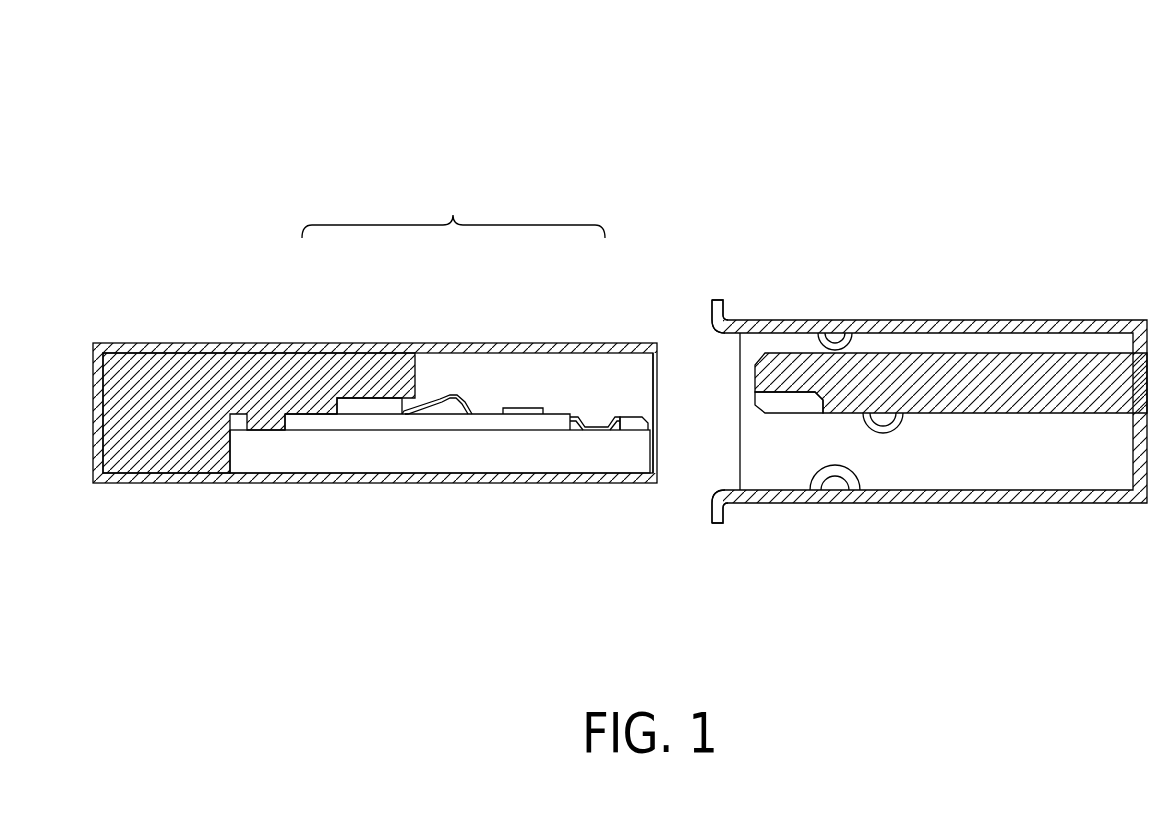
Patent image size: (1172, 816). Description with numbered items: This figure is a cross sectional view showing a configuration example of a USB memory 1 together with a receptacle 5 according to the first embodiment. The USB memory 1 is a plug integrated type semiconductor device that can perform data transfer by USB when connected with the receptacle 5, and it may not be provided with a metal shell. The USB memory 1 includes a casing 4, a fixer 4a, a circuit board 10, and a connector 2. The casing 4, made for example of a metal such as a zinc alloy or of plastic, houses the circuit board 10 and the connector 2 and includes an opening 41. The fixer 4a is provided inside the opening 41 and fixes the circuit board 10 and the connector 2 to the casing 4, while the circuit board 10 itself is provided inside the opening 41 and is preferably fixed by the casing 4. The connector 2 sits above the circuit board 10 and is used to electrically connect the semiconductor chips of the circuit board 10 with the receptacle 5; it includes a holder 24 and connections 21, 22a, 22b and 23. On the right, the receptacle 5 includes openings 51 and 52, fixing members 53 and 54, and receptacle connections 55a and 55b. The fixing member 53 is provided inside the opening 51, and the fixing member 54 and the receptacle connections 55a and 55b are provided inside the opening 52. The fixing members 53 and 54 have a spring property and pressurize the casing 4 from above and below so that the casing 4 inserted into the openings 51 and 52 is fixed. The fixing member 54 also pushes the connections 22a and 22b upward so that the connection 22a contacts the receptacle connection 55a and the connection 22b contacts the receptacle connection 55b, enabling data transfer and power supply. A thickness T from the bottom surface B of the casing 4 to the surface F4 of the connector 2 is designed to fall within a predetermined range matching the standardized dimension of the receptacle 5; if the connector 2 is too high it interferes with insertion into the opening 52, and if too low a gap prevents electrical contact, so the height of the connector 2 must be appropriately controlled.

The USB memory 1 is at (623, 162).
The connector 2 is at (453, 210).
The casing 4 is at (178, 345).
The fixer 4a is at (250, 373).
The receptacle 5 is at (1038, 162).
The circuit board 10 is at (323, 453).
The connection 21 is at (330, 427).
The connection 22a is at (442, 397).
The connection 22b is at (517, 410).
The connection 23 is at (597, 423).
The holder 24 is at (390, 400).
The opening 41 is at (660, 405).
The opening 51 is at (722, 347).
The opening 52 is at (722, 474).
The fixing member 53 is at (822, 322).
The fixing member 54 is at (820, 480).
The receptacle connection 55a is at (772, 402).
The receptacle connection 55b is at (885, 425).
The bottom surface B is at (563, 495).
The thickness T is at (672, 418).
The surface F4 is at (562, 407).